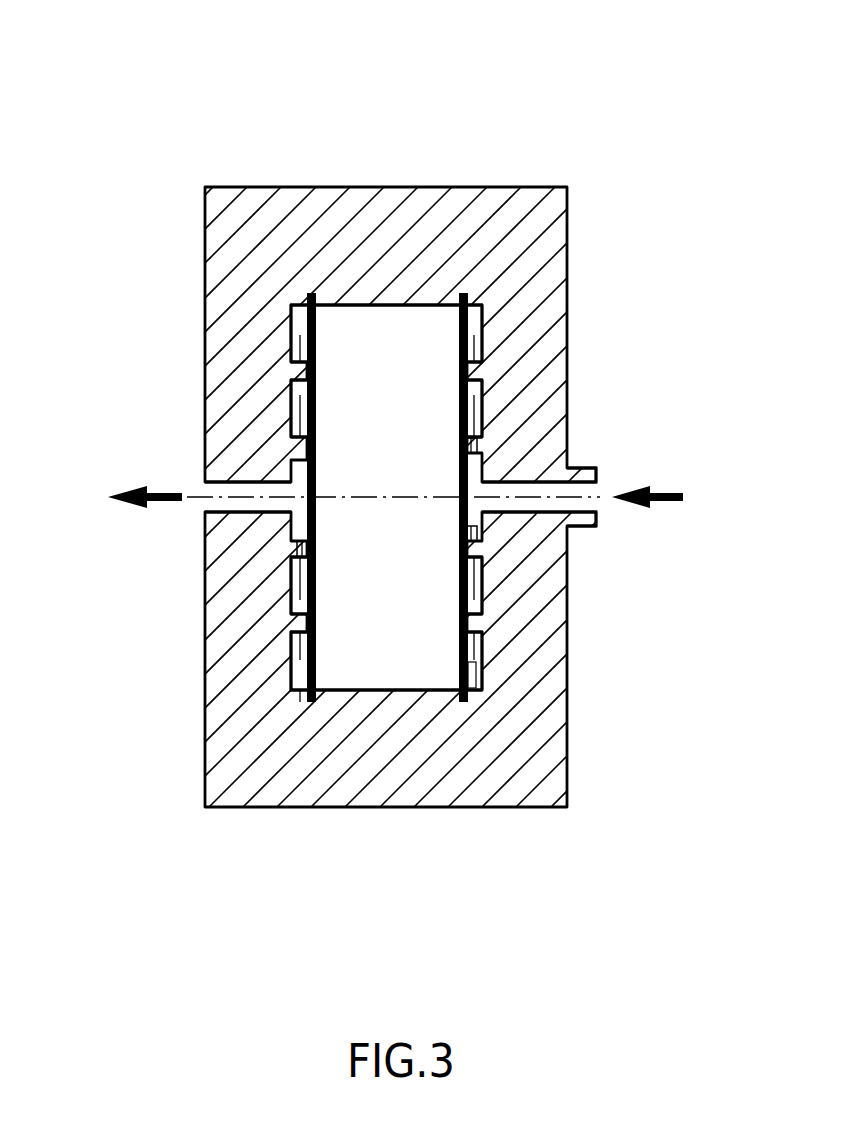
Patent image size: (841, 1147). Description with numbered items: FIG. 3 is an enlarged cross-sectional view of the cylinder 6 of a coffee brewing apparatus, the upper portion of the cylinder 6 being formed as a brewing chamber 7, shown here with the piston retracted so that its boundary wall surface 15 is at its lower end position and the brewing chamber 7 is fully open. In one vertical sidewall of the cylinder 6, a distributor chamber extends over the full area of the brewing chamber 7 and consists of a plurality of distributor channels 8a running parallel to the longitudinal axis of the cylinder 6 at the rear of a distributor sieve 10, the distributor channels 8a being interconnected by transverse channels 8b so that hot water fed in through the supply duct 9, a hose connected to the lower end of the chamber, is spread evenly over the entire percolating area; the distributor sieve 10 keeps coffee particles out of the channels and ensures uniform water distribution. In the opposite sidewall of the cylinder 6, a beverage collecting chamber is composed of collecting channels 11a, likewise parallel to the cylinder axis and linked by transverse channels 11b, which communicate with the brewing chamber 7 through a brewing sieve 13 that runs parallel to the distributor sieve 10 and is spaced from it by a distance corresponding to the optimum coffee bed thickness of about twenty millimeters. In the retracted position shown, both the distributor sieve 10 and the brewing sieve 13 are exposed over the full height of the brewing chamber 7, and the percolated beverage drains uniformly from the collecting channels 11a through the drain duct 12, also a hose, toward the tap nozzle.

The cylinder 6 is at (303, 220).
The brewing chamber 7 is at (407, 340).
The distributor channels 8a is at (473, 400).
The transverse channels 8b is at (475, 445).
The supply duct 9 is at (587, 492).
The distributor sieve 10 is at (472, 668).
The collecting channels 11a is at (293, 400).
The transverse channels 11b is at (297, 548).
The drain duct 12 is at (217, 490).
The brewing sieve 13 is at (309, 695).
The boundary wall surface 15 is at (397, 574).